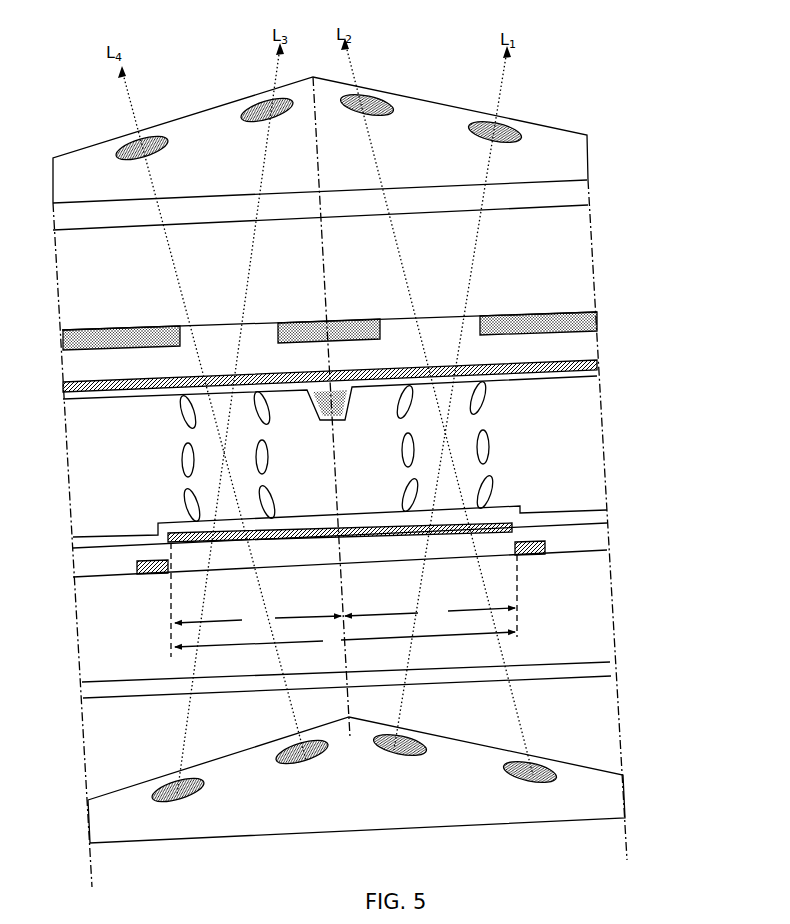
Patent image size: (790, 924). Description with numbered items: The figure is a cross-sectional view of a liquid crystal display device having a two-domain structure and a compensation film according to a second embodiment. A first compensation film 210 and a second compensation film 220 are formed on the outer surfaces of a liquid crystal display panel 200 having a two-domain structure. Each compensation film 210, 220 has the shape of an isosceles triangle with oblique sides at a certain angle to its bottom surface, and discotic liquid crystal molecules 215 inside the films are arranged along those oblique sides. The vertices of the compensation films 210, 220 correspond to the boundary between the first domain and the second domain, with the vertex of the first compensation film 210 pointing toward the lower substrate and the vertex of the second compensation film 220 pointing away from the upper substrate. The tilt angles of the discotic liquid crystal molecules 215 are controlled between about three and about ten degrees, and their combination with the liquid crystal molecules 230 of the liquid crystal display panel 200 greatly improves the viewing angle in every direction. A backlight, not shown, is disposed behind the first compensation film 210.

The liquid crystal display panel 200 is at (589, 207).
The first compensation film 210 is at (626, 775).
The discotic liquid crystal molecules 215 is at (158, 138).
The second compensation film 220 is at (588, 135).
The liquid crystal molecules 230 is at (489, 446).